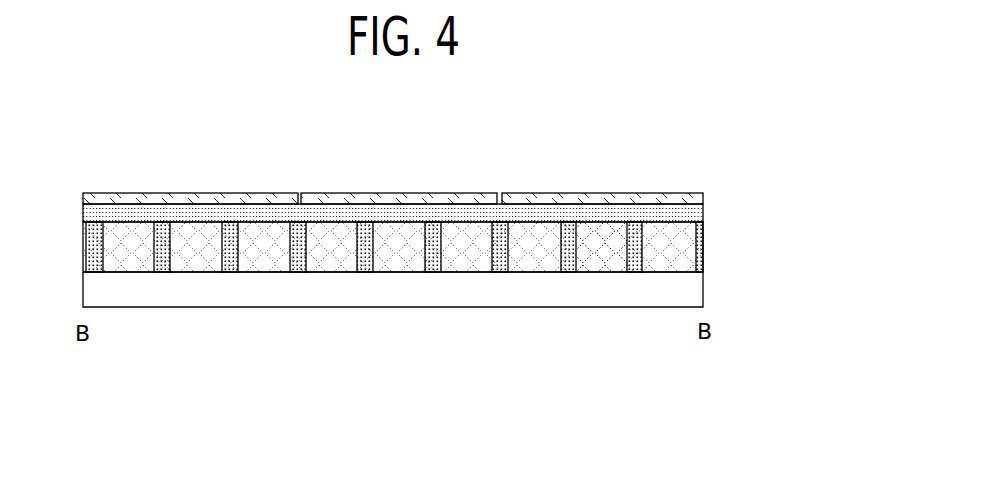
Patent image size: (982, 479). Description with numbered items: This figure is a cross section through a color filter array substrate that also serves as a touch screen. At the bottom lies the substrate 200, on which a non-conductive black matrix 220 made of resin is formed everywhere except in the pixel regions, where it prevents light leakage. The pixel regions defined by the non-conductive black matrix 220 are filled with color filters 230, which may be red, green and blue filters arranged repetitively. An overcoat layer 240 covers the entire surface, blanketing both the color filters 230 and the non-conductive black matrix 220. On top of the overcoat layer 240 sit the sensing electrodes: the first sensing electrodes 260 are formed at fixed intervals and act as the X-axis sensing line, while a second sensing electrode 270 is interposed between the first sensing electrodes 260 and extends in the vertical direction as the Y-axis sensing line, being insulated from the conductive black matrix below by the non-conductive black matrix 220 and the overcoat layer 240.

The substrate 200 is at (703, 288).
The non-conductive black matrix 220 is at (703, 243).
The color filter 230 is at (600, 260).
The overcoat layer 240 is at (705, 212).
The first sensing electrode 260 is at (222, 193).
The second sensing electrode 270 is at (410, 193).